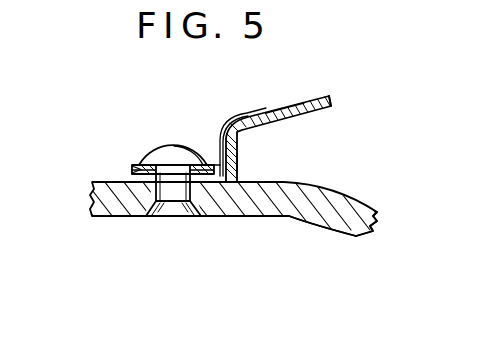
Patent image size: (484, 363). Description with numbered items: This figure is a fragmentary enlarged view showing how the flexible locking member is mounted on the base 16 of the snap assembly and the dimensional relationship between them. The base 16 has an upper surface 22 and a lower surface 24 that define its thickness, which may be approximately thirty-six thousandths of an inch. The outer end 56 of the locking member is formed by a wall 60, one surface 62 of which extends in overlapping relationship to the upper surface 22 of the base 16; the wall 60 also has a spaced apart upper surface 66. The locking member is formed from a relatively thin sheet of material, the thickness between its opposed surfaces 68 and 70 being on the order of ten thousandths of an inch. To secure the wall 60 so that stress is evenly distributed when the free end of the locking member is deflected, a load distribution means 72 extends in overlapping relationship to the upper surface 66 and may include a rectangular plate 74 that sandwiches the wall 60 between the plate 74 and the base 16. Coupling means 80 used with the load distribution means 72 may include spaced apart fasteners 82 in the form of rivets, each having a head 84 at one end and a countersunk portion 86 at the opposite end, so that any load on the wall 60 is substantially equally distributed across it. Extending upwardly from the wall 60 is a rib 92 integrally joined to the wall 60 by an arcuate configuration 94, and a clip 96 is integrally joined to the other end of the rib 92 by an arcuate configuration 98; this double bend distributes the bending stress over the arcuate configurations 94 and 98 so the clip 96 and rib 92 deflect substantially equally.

The base 16 is at (361, 223).
The upper surface 22 is at (335, 192).
The lower surface 24 is at (310, 221).
The outer end 56 is at (128, 172).
The wall 60 is at (140, 181).
The surface 62 is at (199, 180).
The upper surface 66 is at (139, 163).
The opposed surface 68 is at (292, 113).
The opposed surface 70 is at (300, 99).
The load distribution means 72 is at (205, 147).
The rectangular plate 74 is at (127, 165).
The coupling means 80 is at (143, 136).
The fasteners 82 is at (199, 213).
The head 84 is at (172, 142).
The countersunk portion 86 is at (161, 209).
The rib 92 is at (234, 160).
The arcuate configuration 94 is at (215, 132).
The clip 96 is at (319, 105).
The arcuate configuration 98 is at (237, 128).